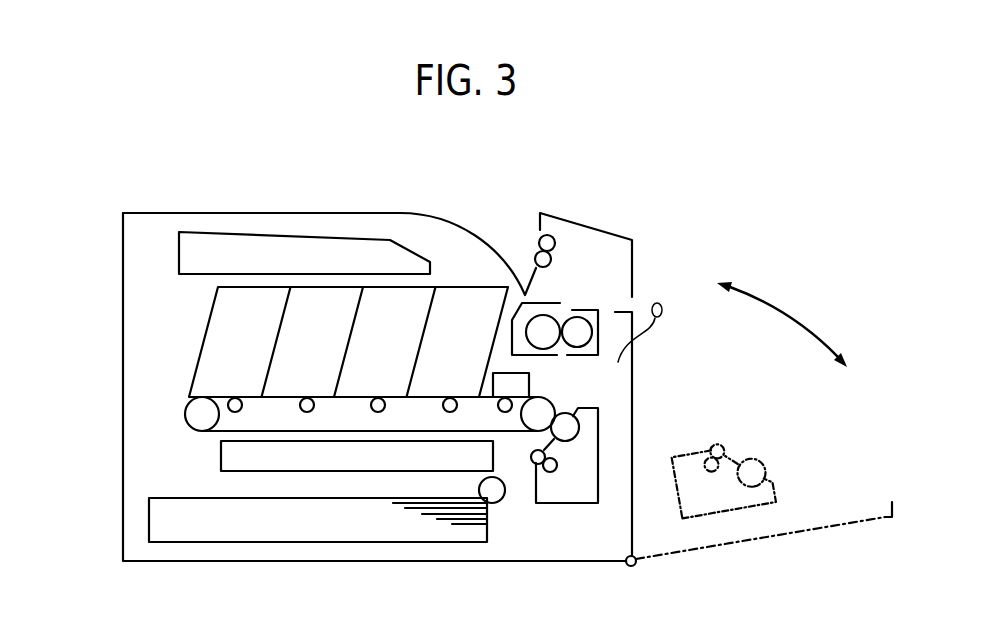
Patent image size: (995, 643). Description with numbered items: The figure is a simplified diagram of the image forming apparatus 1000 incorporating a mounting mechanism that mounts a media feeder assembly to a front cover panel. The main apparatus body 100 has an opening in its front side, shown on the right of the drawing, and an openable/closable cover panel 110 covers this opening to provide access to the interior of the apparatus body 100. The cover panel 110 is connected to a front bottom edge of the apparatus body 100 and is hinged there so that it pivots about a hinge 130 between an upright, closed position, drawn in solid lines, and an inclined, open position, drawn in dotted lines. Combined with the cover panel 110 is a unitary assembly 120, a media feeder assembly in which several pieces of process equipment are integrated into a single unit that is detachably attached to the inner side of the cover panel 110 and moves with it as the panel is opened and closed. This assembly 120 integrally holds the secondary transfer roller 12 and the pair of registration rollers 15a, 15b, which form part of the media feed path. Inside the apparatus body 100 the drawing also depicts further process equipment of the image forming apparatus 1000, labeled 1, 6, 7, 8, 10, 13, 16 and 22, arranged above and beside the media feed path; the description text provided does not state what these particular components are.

The image forming apparatus 1000 is at (107, 243).
The main apparatus body 100 is at (123, 399).
The cover panel 110 is at (633, 395).
The unitary assembly 120 is at (611, 500).
The hinge 130 is at (636, 566).
The image forming units 1 is at (209, 331).
The intermediate transfer unit 6 is at (169, 398).
The exposure device 7 is at (179, 252).
The secondary transfer opposing roller 8 is at (550, 406).
The intermediate transfer belt 10 is at (272, 432).
The toner container 22 is at (347, 471).
The sheet feeding tray 13 is at (185, 498).
The fixing device 16 is at (586, 310).
The secondary transfer roller 12 is at (565, 444).
The registration roller 15a is at (533, 460).
The registration roller 15b is at (548, 472).